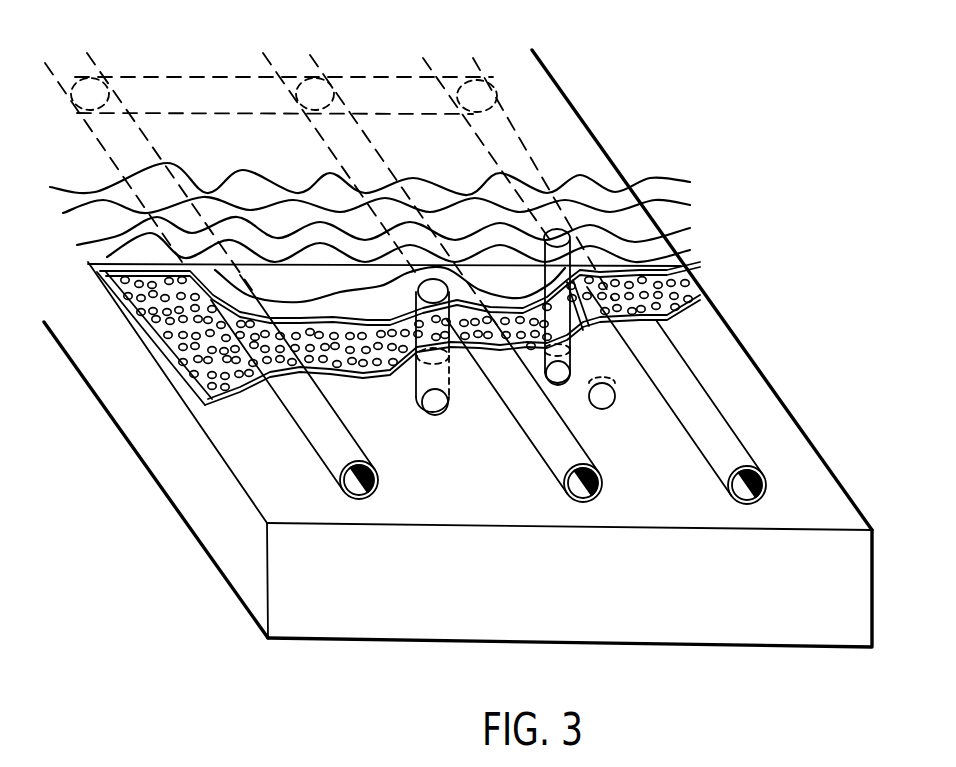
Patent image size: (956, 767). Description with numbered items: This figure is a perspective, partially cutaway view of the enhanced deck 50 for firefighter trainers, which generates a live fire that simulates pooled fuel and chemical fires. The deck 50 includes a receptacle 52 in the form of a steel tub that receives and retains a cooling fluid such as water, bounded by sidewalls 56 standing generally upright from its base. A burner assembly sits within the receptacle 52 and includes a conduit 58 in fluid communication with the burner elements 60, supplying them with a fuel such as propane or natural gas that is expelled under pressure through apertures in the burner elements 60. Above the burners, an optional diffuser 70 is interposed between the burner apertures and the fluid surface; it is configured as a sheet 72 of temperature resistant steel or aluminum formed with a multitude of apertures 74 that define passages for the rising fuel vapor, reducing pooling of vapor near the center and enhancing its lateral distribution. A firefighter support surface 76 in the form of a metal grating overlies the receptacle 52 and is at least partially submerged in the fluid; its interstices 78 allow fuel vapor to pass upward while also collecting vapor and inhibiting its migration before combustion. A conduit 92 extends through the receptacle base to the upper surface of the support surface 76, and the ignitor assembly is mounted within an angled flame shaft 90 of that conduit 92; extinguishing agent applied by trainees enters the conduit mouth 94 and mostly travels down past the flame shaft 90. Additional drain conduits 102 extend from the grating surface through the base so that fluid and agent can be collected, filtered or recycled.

The enhanced deck 50 is at (748, 192).
The receptacle 52 is at (781, 356).
The sidewalls 56 is at (218, 516).
The conduit 58 is at (190, 80).
The burner element 60 is at (302, 432).
The diffuser 70 is at (247, 395).
The sheet 72 is at (180, 380).
The apertures 74 is at (157, 314).
The support surface 76 is at (668, 240).
The interstices 78 is at (615, 195).
The flame shaft 90 is at (610, 385).
The conduit 92 is at (547, 378).
The conduit mouth 94 is at (613, 250).
The drain conduits 102 is at (416, 388).